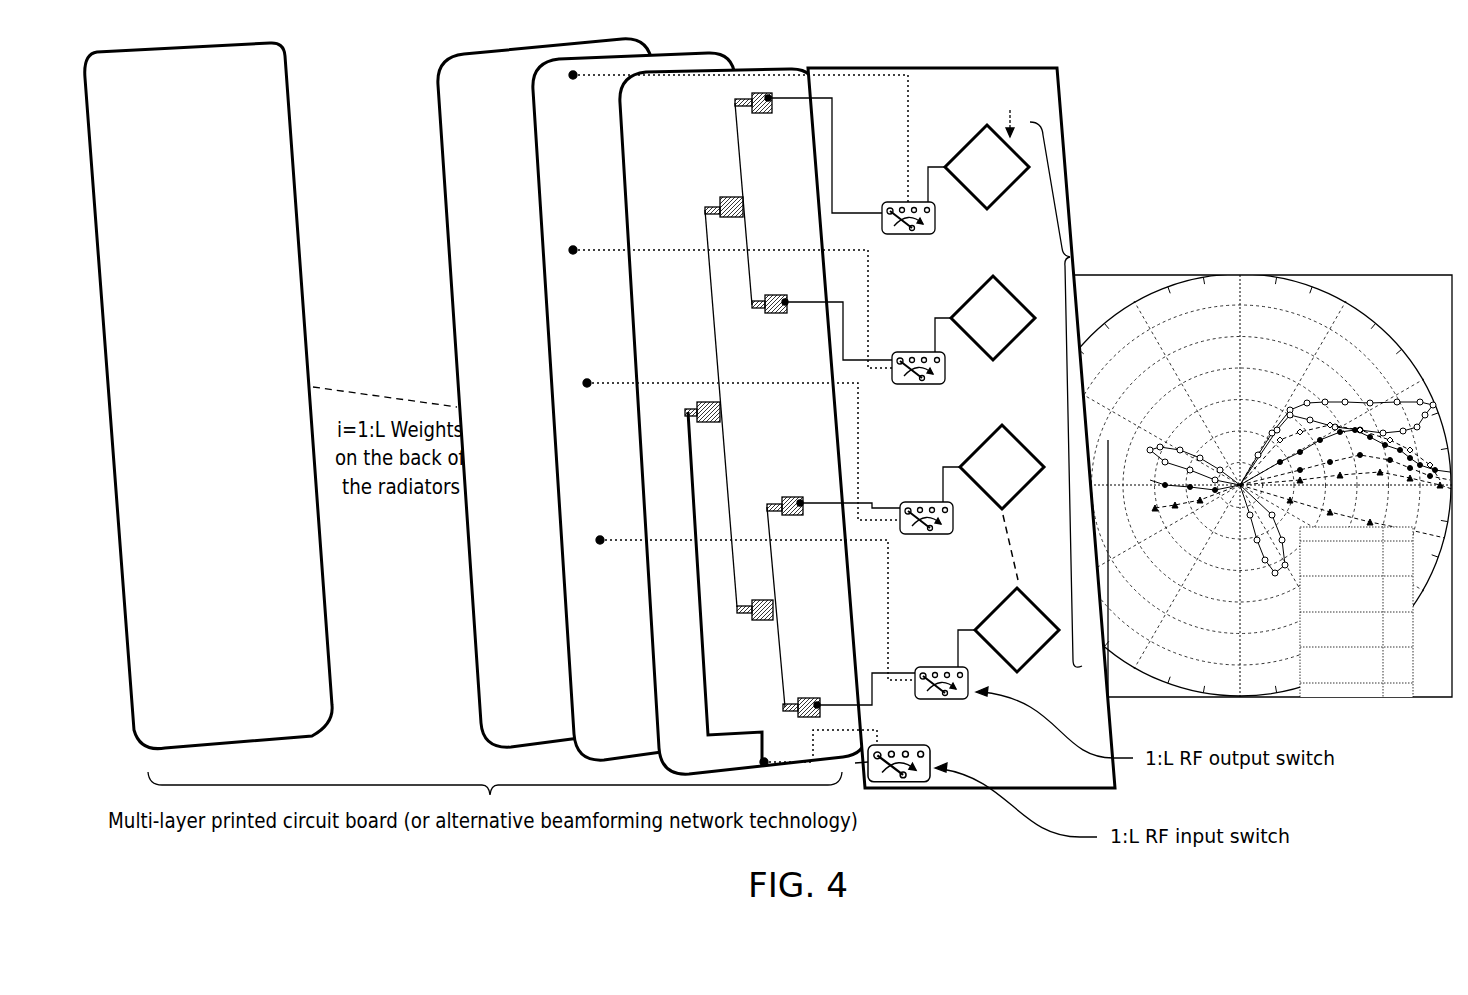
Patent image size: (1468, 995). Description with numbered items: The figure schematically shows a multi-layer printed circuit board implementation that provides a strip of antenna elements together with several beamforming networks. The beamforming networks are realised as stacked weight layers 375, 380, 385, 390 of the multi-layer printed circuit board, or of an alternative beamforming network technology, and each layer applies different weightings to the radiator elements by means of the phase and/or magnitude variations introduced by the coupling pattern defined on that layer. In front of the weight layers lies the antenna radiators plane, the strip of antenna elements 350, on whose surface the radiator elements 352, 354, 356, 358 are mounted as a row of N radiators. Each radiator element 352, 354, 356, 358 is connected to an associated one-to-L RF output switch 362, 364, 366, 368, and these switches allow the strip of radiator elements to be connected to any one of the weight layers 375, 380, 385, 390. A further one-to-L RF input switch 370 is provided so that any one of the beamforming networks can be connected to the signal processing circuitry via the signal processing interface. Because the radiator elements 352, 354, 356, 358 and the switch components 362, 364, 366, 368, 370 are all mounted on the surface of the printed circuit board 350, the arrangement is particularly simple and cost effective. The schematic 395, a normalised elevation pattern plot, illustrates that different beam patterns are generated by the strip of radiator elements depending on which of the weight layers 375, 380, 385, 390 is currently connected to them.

The strip of antenna elements 350 is at (1027, 66).
The radiator element 352 is at (1000, 196).
The radiator element 354 is at (1006, 350).
The radiator element 356 is at (1020, 492).
The radiator element 358 is at (1030, 655).
The switch 362 is at (911, 234).
The switch 364 is at (908, 386).
The switch 366 is at (915, 536).
The switch 368 is at (940, 699).
The switch 370 is at (903, 783).
The weight layer 375 is at (773, 63).
The weight layer 380 is at (713, 56).
The weight layer 385 is at (441, 88).
The weight layer 390 is at (287, 56).
The schematic 395 is at (1370, 274).